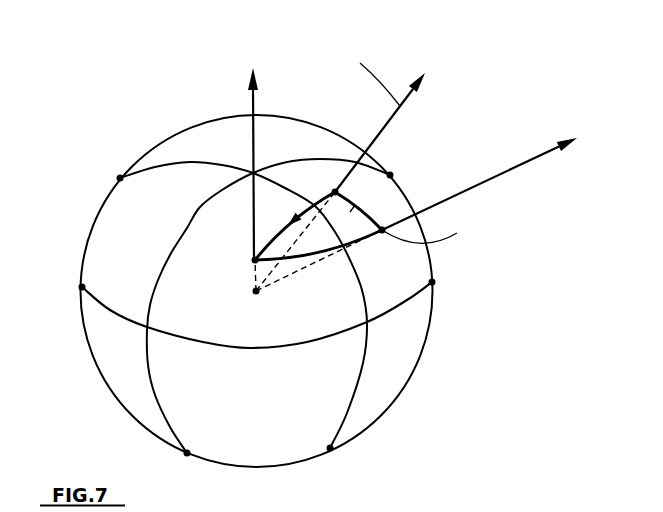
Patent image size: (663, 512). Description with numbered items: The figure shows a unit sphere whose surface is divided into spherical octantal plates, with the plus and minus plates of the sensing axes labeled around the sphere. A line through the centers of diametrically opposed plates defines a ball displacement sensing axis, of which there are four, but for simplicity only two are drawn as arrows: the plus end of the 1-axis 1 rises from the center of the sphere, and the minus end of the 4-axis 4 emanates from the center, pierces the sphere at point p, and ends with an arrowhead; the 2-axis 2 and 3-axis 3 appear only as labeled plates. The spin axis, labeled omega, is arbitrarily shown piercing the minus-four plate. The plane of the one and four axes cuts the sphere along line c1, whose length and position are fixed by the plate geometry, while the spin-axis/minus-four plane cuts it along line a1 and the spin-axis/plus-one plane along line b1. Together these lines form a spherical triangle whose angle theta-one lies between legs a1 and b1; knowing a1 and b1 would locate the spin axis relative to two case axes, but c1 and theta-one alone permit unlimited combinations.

The 1-axis 1 is at (211, 177).
The 2-axis 2 is at (248, 302).
The 3-axis 3 is at (223, 283).
The 4-axis 4 is at (356, 246).
The line a1 is at (350, 198).
The line b1 is at (304, 211).
The line c1 is at (318, 244).
The point p is at (428, 231).